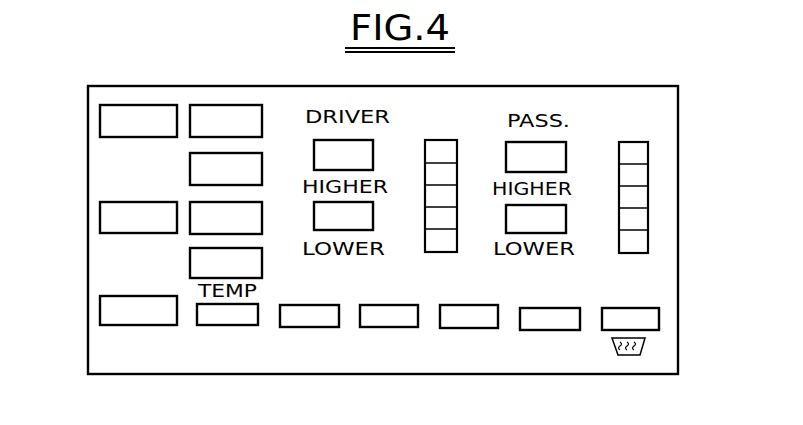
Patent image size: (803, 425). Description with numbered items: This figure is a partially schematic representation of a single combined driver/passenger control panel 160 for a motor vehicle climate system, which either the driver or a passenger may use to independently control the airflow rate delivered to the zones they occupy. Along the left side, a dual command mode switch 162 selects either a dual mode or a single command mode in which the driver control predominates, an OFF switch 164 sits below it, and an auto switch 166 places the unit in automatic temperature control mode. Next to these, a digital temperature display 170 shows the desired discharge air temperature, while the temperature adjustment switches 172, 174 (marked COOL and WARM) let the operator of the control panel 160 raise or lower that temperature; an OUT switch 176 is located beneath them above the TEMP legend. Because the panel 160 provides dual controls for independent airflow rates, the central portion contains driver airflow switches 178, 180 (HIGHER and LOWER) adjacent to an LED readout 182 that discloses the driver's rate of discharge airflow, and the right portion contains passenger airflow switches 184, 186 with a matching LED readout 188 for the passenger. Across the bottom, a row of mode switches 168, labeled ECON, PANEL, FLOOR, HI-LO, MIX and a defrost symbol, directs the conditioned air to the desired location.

The combined driver/passenger control panel 160 is at (480, 86).
The dual command mode switch 162 is at (123, 105).
The OFF button 164 is at (100, 204).
The auto switch 166 is at (162, 325).
The mode switches 168 is at (243, 303).
The digital temperature display 170 is at (262, 155).
The temperature adjustment switch 172 is at (210, 105).
The temperature adjustment switch 174 is at (190, 204).
The OUT temperature button 176 is at (190, 262).
The driver airflow switch 178 is at (373, 147).
The driver airflow switch 180 is at (315, 228).
The LED readout 182 is at (447, 140).
The passenger airflow switch 184 is at (566, 143).
The passenger airflow switch 186 is at (566, 222).
The LED readout 188 is at (648, 155).